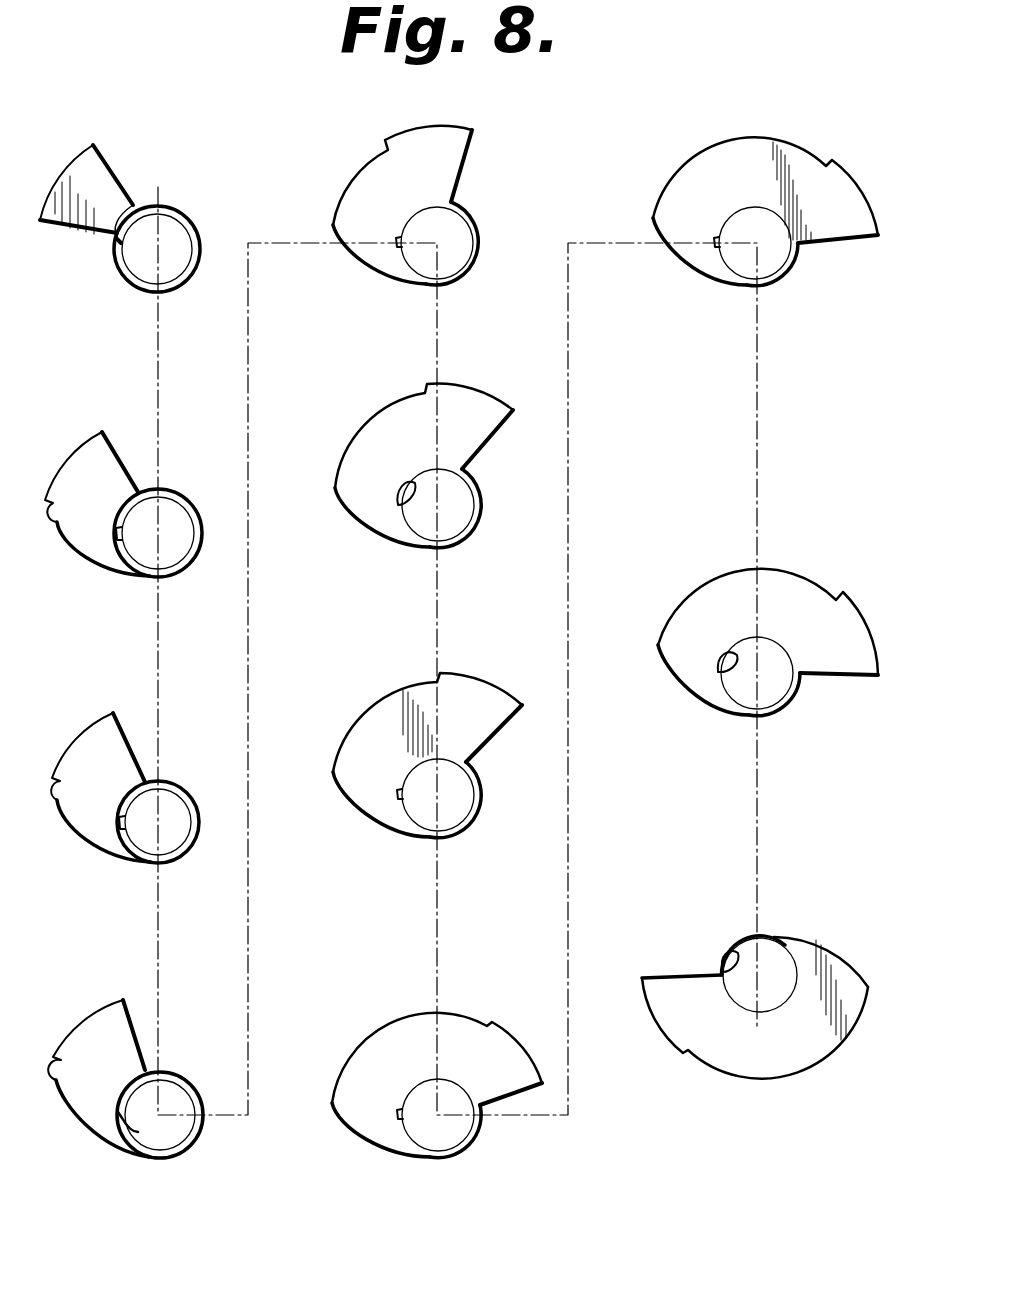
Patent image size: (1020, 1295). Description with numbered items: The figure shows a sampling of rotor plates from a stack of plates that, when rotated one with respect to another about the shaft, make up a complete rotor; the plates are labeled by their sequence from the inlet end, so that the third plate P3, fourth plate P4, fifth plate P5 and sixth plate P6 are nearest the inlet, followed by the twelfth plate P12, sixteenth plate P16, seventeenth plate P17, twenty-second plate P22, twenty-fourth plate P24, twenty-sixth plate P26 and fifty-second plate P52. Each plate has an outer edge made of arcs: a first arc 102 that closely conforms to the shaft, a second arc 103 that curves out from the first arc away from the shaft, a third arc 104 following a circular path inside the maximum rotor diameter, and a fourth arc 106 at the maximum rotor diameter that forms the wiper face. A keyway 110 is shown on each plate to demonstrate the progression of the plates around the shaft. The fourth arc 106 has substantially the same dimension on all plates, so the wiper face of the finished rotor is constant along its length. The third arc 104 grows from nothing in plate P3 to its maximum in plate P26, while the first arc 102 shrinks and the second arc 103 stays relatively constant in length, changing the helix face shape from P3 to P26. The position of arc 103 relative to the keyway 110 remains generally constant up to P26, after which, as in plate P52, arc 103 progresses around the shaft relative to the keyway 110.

The first arc 102 is at (136, 286).
The second arc 103 is at (130, 578).
The third arc 104 is at (63, 523).
The fourth arc 106 is at (78, 155).
The keyway 110 is at (145, 206).
The third plate P3 is at (194, 214).
The fourth plate P4 is at (176, 492).
The fifth plate P5 is at (180, 782).
The sixth plate P6 is at (170, 1070).
The twelfth plate P12 is at (479, 218).
The sixteenth plate P16 is at (487, 495).
The seventeenth plate P17 is at (482, 798).
The twenty-second plate P22 is at (372, 1050).
The twenty-fourth plate P24 is at (802, 160).
The twenty-sixth plate P26 is at (723, 580).
The fifty-second plate P52 is at (783, 1078).